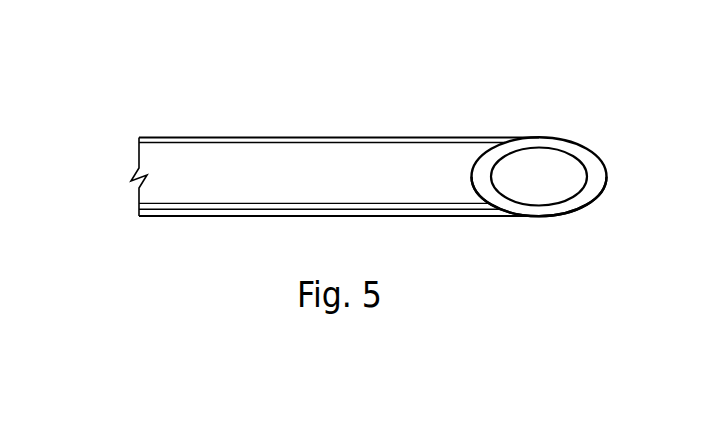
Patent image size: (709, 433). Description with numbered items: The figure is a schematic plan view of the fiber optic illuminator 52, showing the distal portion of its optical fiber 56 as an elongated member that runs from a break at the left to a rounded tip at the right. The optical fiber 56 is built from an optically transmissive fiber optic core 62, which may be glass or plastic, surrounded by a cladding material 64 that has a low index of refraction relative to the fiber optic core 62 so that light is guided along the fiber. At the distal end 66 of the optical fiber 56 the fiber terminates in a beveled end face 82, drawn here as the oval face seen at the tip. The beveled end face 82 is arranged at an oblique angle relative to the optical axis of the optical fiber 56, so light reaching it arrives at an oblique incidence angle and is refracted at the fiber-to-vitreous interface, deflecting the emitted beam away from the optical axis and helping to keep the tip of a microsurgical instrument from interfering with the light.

The fiber optic illuminator 52 is at (403, 171).
The optical fiber 56 is at (195, 217).
The fiber optic core 62 is at (560, 163).
The cladding material 64 is at (593, 182).
The distal end 66 is at (567, 207).
The beveled end face 82 is at (547, 188).